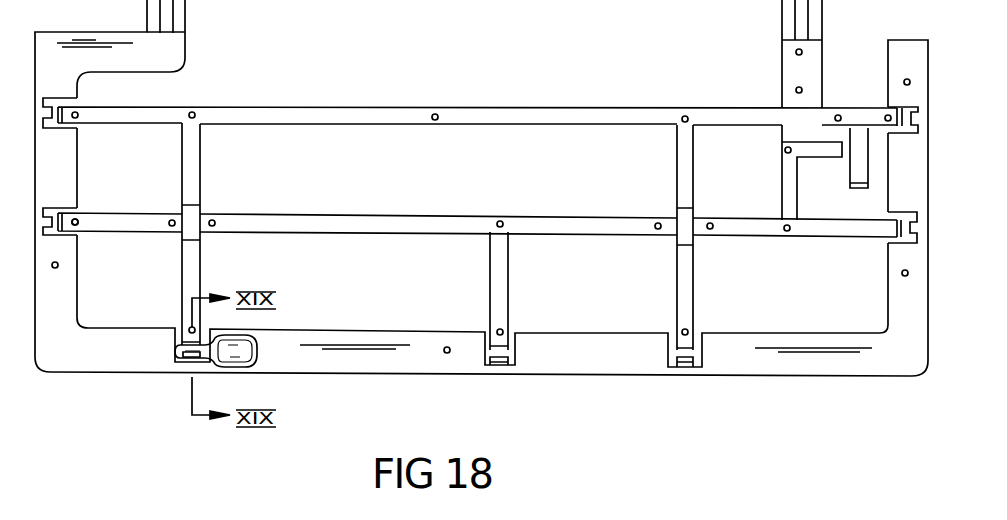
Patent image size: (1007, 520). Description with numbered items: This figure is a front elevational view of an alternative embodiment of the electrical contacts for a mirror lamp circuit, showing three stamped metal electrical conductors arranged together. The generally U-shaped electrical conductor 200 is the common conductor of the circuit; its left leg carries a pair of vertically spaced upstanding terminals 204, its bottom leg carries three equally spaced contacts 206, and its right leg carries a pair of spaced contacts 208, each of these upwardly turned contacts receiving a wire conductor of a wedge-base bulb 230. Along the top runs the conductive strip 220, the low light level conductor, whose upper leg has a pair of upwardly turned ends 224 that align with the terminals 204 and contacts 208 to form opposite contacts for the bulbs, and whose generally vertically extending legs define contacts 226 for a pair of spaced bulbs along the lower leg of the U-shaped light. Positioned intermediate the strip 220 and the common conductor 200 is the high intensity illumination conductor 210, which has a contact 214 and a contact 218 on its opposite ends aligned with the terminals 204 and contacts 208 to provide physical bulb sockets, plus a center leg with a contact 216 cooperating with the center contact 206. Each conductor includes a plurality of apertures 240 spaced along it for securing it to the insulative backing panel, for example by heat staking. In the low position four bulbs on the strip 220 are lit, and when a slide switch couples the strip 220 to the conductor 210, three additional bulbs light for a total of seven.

The electrical conductor 200 is at (582, 376).
The upstanding terminals 204 is at (43, 114).
The contacts 206 is at (190, 359).
The spaced contacts 208 is at (917, 118).
The high intensity illumination conductor 210 is at (550, 225).
The contact 214 is at (77, 226).
The contact 216 is at (503, 345).
The contact 218 is at (898, 229).
The conductive strip 220 is at (559, 105).
The upwardly turned ends 224 is at (62, 111).
The contacts 226 is at (182, 323).
The bulb 230 is at (238, 365).
The apertures 240 is at (194, 112).